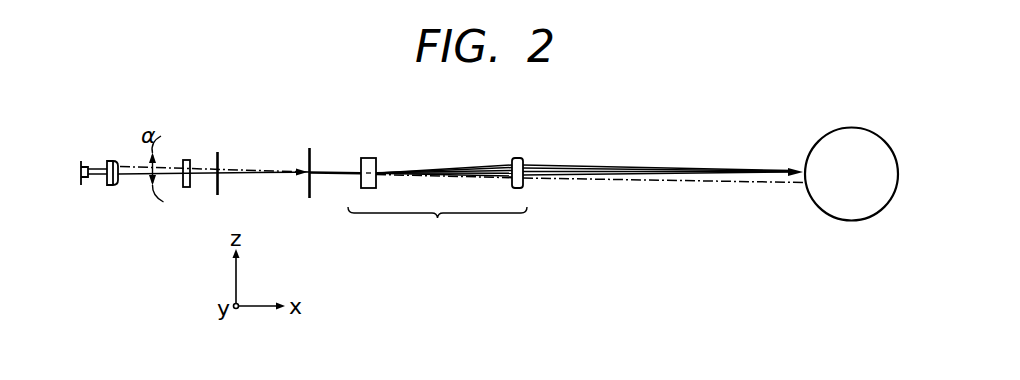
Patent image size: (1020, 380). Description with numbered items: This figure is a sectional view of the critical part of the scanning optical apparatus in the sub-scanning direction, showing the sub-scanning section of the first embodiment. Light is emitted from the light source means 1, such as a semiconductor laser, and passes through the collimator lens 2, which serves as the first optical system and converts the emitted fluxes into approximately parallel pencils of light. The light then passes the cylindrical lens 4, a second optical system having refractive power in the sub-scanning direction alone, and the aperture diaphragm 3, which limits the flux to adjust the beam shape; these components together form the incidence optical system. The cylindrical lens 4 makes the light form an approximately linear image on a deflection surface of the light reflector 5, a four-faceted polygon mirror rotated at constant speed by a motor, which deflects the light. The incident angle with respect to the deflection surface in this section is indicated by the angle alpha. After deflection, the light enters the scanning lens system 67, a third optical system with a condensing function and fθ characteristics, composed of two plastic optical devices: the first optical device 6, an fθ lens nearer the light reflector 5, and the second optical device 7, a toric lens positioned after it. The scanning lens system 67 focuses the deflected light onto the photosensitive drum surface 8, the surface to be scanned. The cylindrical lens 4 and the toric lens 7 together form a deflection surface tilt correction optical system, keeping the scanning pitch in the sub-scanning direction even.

The light source means 1 is at (81, 161).
The collimator lens 2 is at (110, 160).
The aperture diaphragm 3 is at (219, 162).
The cylindrical lens 4 is at (187, 160).
The light reflector 5 is at (309, 150).
The first optical device 6 is at (368, 158).
The second optical device 7 is at (517, 158).
The photosensitive drum surface 8 is at (812, 144).
The scanning lens system 67 is at (437, 230).